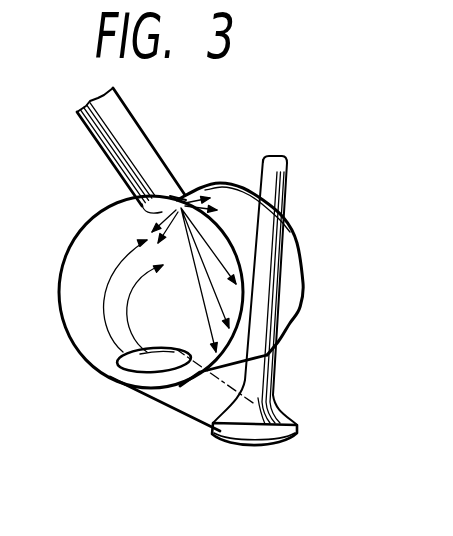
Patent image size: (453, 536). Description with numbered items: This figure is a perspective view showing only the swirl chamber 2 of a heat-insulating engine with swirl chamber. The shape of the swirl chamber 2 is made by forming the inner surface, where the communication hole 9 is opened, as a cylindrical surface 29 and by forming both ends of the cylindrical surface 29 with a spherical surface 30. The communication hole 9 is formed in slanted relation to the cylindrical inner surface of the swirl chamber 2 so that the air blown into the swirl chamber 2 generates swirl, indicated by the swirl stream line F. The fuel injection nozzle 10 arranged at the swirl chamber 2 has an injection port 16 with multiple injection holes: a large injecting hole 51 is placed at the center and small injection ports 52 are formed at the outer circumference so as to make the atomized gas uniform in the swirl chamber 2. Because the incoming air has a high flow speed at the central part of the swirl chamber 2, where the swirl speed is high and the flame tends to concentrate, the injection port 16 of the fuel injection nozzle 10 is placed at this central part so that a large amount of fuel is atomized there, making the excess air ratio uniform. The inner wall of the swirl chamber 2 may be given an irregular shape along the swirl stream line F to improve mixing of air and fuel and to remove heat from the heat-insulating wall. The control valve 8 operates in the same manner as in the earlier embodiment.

The swirl chamber 2 is at (88, 252).
The control valve 8 is at (256, 366).
The communication hole 9 is at (200, 403).
The fuel injection nozzle 10 is at (137, 142).
The injection port 16 is at (173, 192).
The cylindrical surface 29 is at (287, 273).
The spherical surface 30 is at (287, 223).
The large injecting hole 51 is at (183, 232).
The small injection ports 52 is at (184, 196).
The swirl stream line F is at (125, 296).